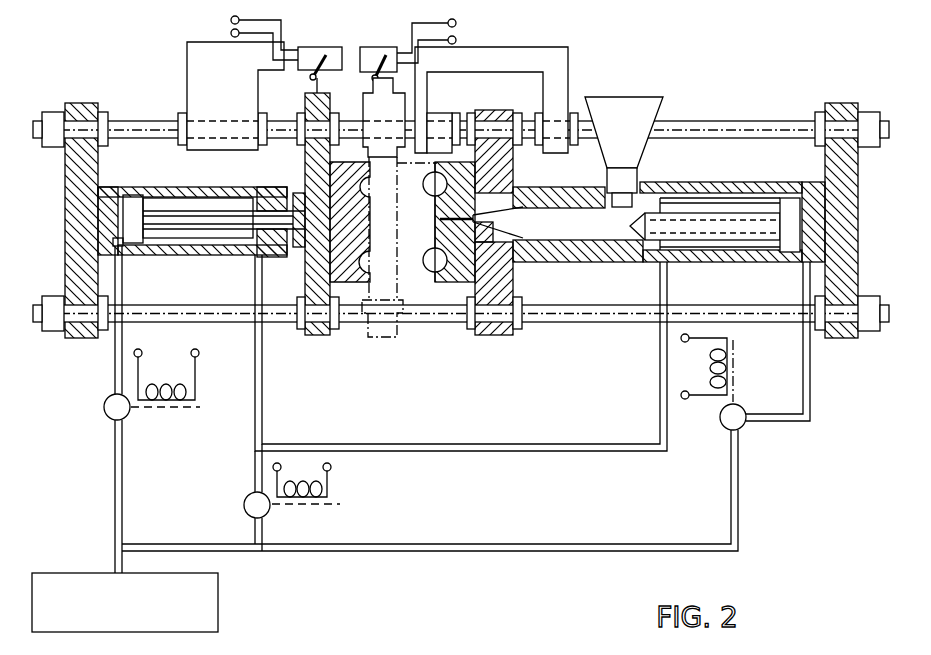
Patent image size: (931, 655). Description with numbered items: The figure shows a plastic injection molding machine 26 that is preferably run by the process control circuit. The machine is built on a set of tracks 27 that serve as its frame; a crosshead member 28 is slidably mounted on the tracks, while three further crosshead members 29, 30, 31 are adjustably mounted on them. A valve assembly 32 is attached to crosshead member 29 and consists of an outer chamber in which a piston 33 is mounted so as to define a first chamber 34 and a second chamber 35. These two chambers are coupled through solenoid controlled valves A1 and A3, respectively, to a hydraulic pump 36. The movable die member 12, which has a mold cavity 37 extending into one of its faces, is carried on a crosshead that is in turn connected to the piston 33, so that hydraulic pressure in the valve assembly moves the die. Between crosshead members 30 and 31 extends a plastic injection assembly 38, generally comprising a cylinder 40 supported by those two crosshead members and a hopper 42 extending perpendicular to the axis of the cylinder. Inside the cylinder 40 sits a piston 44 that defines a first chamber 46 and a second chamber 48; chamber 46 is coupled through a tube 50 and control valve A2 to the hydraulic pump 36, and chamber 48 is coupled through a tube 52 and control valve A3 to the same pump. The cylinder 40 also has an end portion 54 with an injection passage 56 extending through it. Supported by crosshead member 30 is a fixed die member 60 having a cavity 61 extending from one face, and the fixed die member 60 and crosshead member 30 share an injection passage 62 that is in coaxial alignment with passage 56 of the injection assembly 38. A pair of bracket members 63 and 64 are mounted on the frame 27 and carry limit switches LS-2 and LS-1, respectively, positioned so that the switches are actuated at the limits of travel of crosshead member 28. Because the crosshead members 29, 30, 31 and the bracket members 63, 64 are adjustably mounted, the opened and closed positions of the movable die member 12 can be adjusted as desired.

The movable die member 12 is at (318, 335).
The plastic molding machine 26 is at (134, 84).
The tracks 27 is at (736, 125).
The crosshead member 28 is at (301, 335).
The crosshead member 29 is at (76, 338).
The crosshead member 30 is at (492, 335).
The crosshead member 31 is at (842, 338).
The valve assembly 32 is at (215, 192).
The piston 33 is at (135, 196).
The first chamber 34 is at (123, 250).
The second chamber 35 is at (228, 245).
The hydraulic pump 36 is at (218, 617).
The mold cavity 37 is at (363, 284).
The plastic injection assembly 38 is at (556, 268).
The cylinder 40 is at (629, 262).
The hopper 42 is at (633, 100).
The piston 44 is at (790, 236).
The first chamber 46 is at (806, 260).
The second chamber 48 is at (702, 255).
The tube 50 is at (806, 432).
The tube 52 is at (470, 455).
The end portion 54 is at (500, 337).
The injection passage 56 is at (517, 234).
The fixed die member 60 is at (453, 247).
The cavity 61 is at (443, 267).
The injection passage 62 is at (460, 283).
The bracket member 63 is at (187, 58).
The bracket member 64 is at (548, 52).
The solenoid controlled valve A1 is at (107, 416).
The control valve A2 is at (745, 430).
The solenoid controlled valve A3 is at (244, 506).
The limit switch LS-1 is at (407, 174).
The limit switch LS-2 is at (286, 52).